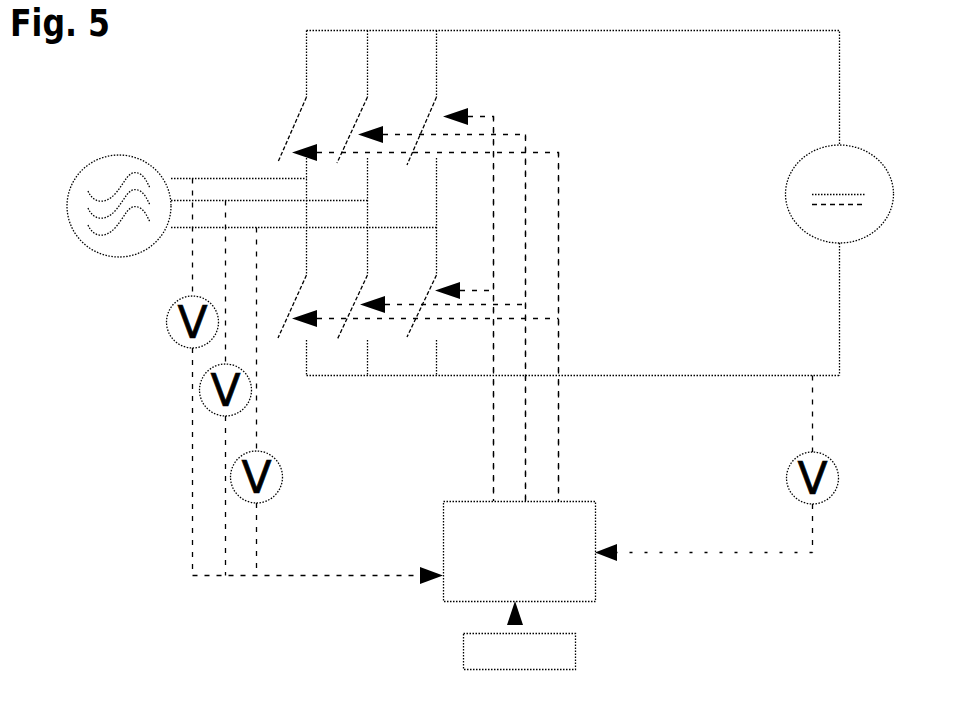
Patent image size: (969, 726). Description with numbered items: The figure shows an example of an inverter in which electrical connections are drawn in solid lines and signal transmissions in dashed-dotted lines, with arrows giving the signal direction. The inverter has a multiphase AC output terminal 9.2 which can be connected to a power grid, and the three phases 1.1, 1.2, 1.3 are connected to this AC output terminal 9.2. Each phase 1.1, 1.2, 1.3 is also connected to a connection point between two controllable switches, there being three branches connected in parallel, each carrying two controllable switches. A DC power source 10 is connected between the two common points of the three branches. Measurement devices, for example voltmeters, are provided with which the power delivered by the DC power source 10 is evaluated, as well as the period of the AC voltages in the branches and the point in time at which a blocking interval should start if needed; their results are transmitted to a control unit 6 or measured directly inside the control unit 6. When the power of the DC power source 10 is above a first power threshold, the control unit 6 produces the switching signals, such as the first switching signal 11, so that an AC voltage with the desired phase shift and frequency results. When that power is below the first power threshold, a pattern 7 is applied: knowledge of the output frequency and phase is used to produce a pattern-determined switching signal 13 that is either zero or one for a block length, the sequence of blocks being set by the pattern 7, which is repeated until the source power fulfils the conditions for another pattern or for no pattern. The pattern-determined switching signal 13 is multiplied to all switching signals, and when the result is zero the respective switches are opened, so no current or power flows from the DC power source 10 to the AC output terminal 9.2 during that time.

The multiphase AC output terminal 9.2 is at (103, 175).
The first phase 1.1 is at (205, 178).
The second phase 1.2 is at (240, 200).
The third phase 1.3 is at (280, 227).
The DC power source 10 is at (860, 170).
The first switching signal 11 is at (488, 413).
The pattern-determined switching signal 13 is at (526, 309).
The control unit 6 is at (588, 575).
The pattern 7 is at (465, 644).